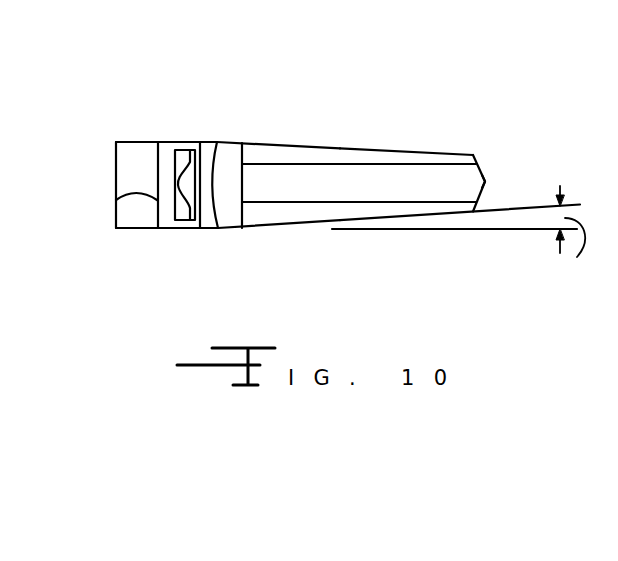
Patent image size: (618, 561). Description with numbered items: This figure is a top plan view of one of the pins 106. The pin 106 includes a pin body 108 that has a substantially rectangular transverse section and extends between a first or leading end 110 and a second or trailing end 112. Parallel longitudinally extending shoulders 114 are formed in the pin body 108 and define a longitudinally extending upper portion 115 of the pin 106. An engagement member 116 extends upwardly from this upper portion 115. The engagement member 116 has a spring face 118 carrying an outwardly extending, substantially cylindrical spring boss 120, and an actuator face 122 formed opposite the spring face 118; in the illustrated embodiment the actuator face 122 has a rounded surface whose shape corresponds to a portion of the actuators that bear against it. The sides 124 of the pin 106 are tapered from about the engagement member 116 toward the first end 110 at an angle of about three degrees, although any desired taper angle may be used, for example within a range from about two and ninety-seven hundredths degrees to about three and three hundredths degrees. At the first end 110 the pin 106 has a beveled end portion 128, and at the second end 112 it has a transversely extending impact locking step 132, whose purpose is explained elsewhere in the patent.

The pin 106 is at (193, 121).
The pin body 108 is at (116, 146).
The first end 110 is at (482, 160).
The second end 112 is at (115, 190).
The shoulders 114 is at (310, 148).
The upper portion 115 is at (400, 183).
The engagement member 116 is at (225, 230).
The spring face 118 is at (190, 148).
The spring boss 120 is at (177, 221).
The actuator face 122 is at (230, 148).
The sides 124 is at (363, 148).
The beveled end portion 128 is at (483, 176).
The impact locking step 132 is at (116, 200).